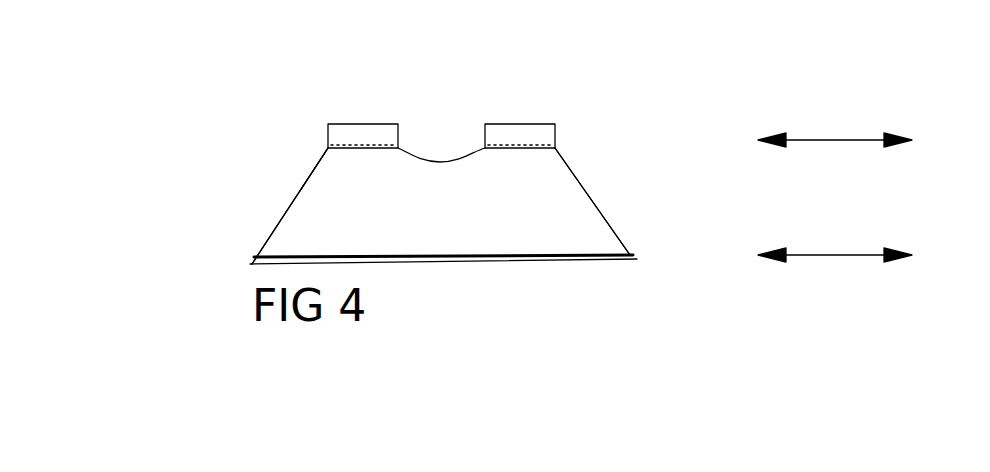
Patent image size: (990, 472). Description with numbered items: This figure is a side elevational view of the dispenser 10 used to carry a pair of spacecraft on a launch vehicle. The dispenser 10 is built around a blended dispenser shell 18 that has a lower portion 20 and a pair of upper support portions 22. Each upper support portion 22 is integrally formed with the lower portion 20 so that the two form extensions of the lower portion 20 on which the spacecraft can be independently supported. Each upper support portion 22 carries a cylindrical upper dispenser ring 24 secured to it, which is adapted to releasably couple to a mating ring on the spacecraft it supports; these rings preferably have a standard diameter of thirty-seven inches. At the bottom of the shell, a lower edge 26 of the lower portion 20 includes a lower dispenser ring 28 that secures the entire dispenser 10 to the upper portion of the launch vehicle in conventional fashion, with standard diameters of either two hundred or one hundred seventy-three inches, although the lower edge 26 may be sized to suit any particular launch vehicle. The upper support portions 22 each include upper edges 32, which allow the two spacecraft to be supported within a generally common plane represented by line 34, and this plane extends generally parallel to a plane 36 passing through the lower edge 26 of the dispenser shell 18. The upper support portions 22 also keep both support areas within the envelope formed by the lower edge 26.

The dispenser 10 is at (567, 72).
The blended dispenser shell 18 is at (318, 197).
The lower portion 20 is at (293, 228).
The upper support portion 22 is at (336, 168).
The upper dispenser ring 24 is at (503, 124).
The lower edge 26 is at (615, 252).
The lower dispenser ring 28 is at (525, 263).
The upper edge 32 is at (357, 124).
The line representing common plane 34 is at (818, 140).
The plane through lower edge 36 is at (832, 255).